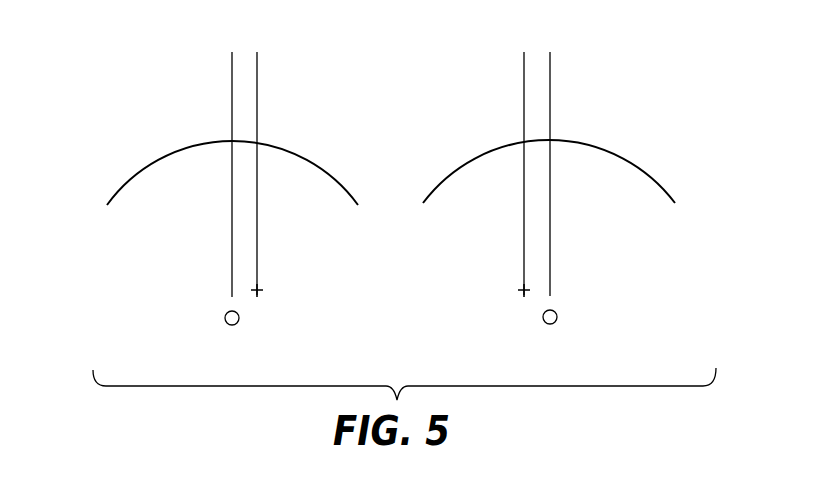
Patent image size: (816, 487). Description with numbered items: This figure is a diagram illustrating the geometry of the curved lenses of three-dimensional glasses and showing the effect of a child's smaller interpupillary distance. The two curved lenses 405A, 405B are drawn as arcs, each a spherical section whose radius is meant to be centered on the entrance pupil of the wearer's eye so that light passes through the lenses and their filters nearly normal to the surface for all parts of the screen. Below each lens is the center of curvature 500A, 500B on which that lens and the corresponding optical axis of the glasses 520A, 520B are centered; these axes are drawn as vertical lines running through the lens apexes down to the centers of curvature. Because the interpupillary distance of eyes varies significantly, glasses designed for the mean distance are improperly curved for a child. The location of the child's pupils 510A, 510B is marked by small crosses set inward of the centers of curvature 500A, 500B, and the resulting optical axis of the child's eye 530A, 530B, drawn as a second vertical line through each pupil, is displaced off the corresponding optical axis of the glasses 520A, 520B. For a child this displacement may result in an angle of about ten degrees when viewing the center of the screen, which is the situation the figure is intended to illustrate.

The lens 405A is at (116, 166).
The lens 405B is at (667, 165).
The center of curvature 500A is at (232, 326).
The center of curvature 500B is at (550, 325).
The child's pupil 510A is at (280, 292).
The child's pupil 510B is at (504, 292).
The optical axis of the glasses 520A is at (230, 45).
The optical axis of the glasses 520B is at (552, 45).
The optical axis of the child's eye 530A is at (259, 45).
The optical axis of the child's eye 530B is at (522, 45).